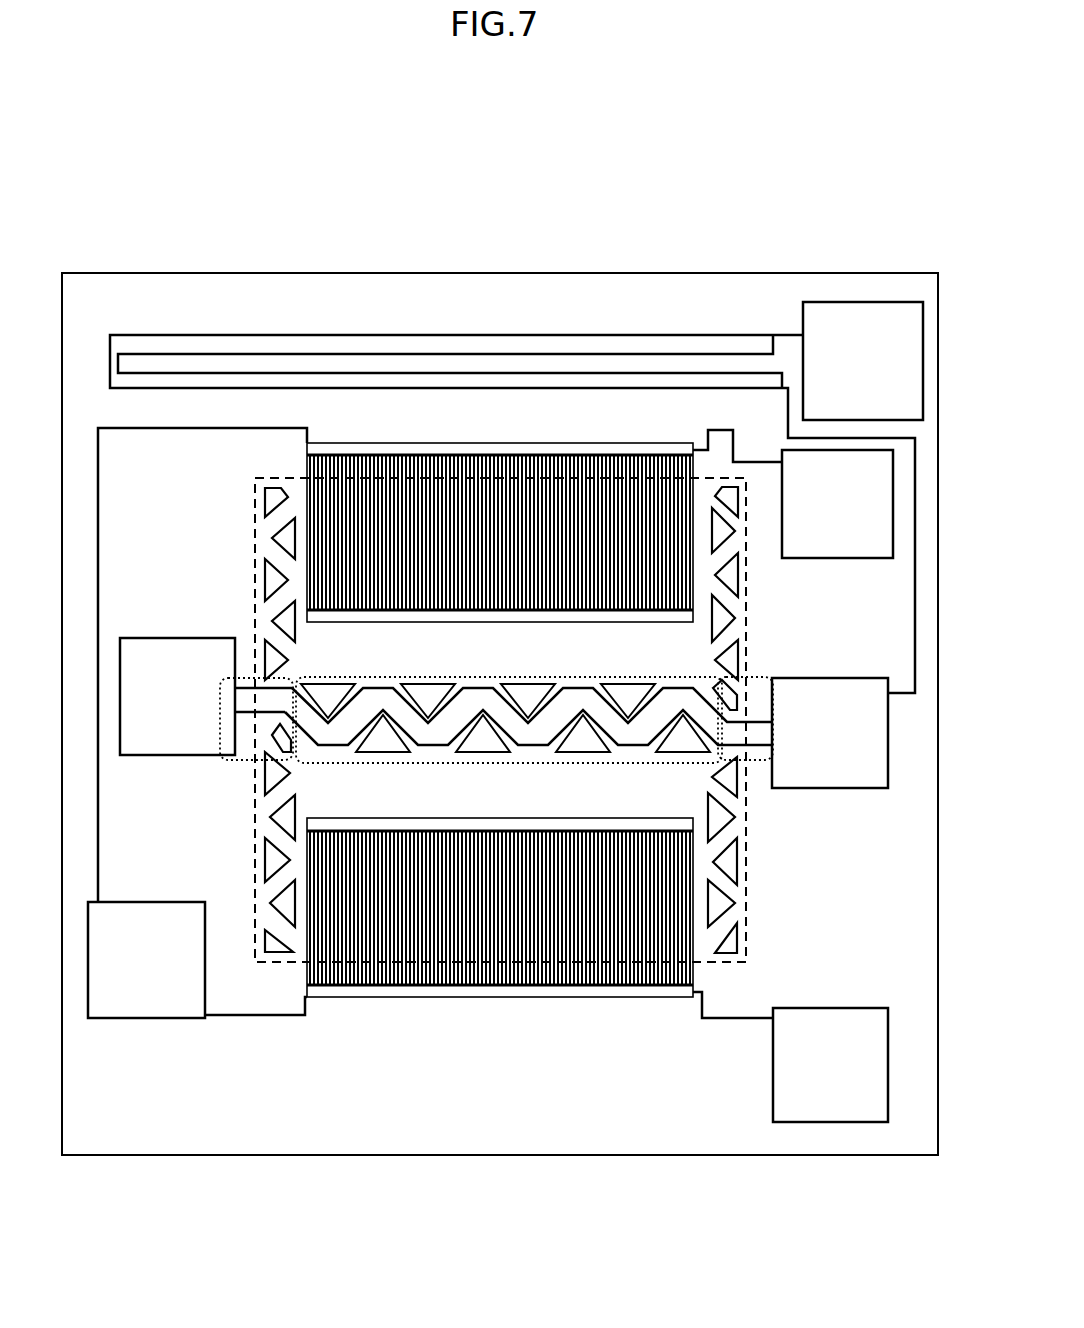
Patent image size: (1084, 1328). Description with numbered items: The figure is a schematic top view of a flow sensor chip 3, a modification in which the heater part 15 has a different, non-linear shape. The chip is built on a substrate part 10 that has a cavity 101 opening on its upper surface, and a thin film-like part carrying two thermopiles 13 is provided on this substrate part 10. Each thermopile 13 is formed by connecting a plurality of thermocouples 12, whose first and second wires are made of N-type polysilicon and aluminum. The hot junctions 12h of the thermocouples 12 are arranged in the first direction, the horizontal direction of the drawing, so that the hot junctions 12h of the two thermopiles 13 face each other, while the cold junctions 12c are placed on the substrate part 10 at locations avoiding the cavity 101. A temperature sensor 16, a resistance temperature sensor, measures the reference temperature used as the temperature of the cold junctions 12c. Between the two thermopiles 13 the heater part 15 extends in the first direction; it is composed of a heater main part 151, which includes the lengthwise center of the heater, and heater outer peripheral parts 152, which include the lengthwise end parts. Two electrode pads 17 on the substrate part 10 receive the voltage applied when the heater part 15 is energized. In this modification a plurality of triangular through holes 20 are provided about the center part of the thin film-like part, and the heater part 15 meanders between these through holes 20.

The flow sensor chip 3 is at (836, 181).
The substrate part 10 is at (120, 1158).
The thermocouple 12 is at (604, 456).
The cold junction 12c is at (373, 452).
The hot junction 12h is at (272, 679).
The thermopile 13 is at (296, 468).
The heater part 15 is at (513, 755).
The temperature sensor 16 is at (610, 336).
The electrode pad 17 is at (155, 655).
The triangular through hole 20 is at (267, 583).
The cavity 101 is at (283, 966).
The heater main part 151 is at (578, 678).
The heater outer peripheral part 152 is at (245, 763).